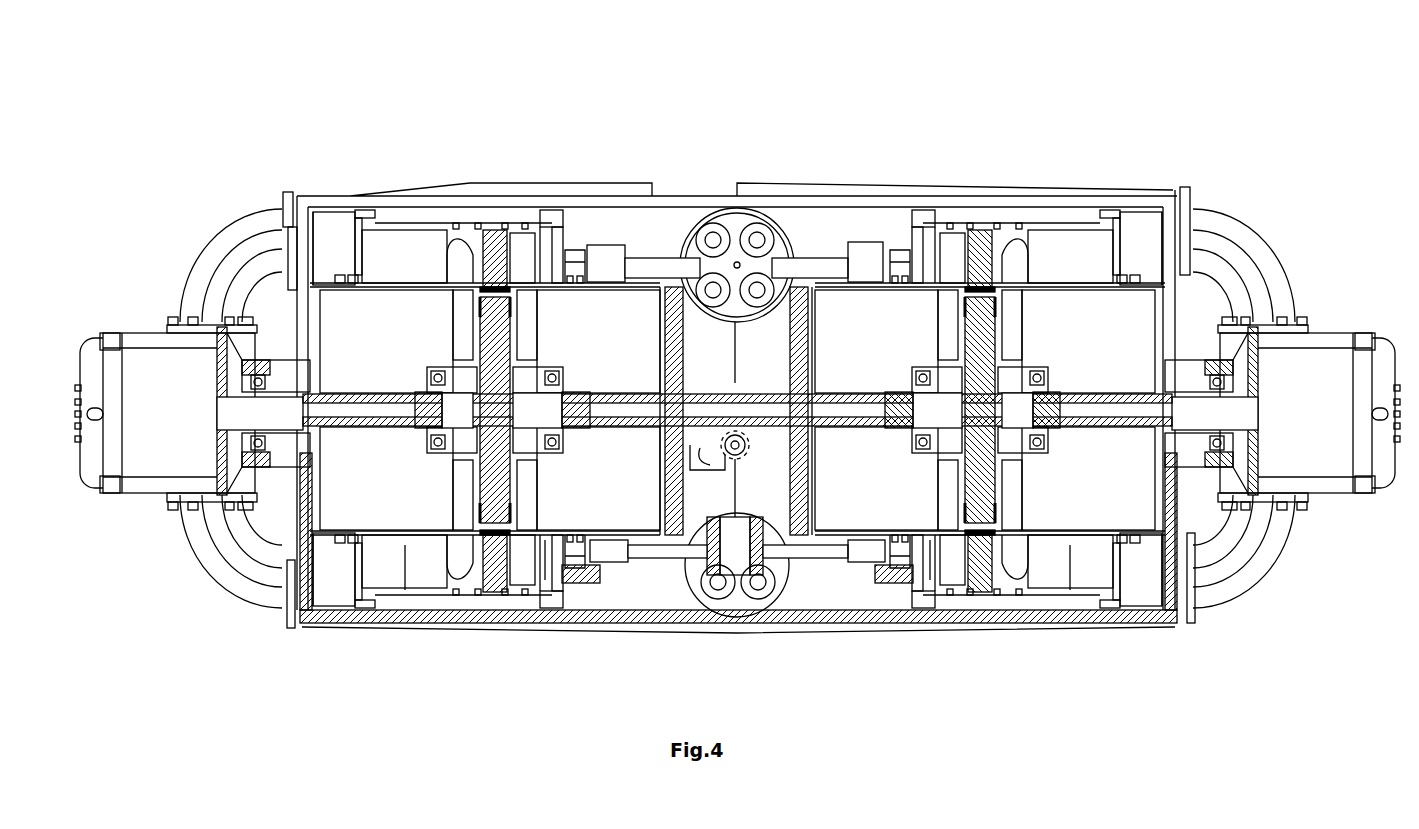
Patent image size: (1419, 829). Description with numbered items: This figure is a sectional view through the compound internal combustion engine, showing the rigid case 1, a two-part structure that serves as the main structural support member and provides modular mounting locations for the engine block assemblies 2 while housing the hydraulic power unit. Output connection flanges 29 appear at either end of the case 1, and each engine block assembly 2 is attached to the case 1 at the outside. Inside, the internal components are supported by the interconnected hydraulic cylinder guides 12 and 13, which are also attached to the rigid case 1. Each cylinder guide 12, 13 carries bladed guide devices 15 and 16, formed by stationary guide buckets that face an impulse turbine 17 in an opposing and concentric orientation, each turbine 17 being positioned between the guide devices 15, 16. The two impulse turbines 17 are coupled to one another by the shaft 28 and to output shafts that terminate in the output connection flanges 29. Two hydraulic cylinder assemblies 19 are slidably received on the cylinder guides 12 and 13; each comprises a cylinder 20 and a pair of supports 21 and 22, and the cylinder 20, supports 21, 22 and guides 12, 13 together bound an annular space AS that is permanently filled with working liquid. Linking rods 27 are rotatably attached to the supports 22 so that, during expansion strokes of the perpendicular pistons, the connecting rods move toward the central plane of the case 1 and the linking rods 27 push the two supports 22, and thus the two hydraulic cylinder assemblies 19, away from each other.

The rigid case 1 is at (325, 196).
The engine block assembly 2 is at (147, 365).
The hydraulic cylinder guide 12 is at (628, 530).
The hydraulic cylinder guide 13 is at (383, 540).
The bladed guide device 15 is at (462, 247).
The bladed guide device 16 is at (521, 242).
The impulse turbine 17 is at (490, 278).
The hydraulic cylinder assembly 19 is at (548, 213).
The hydraulic cylinder 20 is at (1062, 212).
The support 21 is at (350, 272).
The support 22 is at (897, 272).
The linking rod 27 is at (660, 263).
The shaft 28 is at (823, 412).
The output connection flange 29 is at (224, 330).
The annular space AS is at (407, 570).